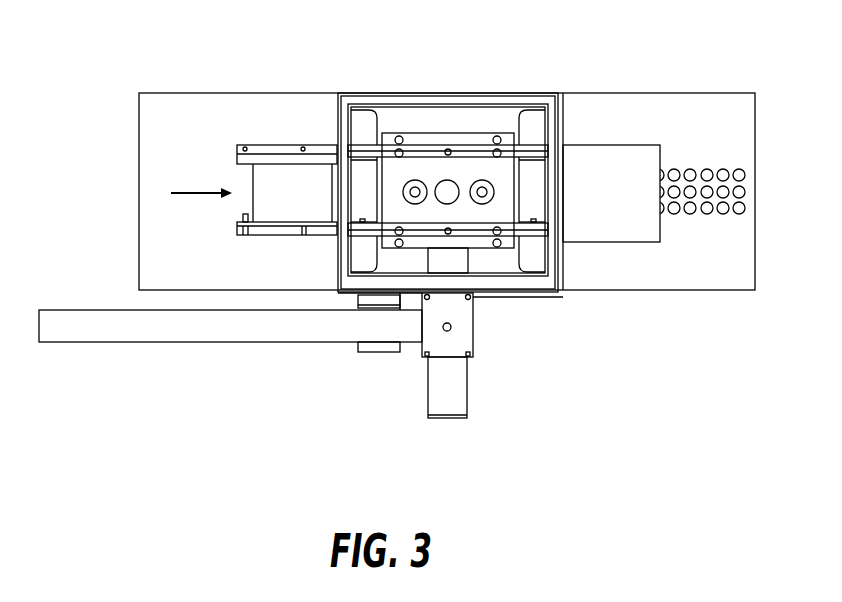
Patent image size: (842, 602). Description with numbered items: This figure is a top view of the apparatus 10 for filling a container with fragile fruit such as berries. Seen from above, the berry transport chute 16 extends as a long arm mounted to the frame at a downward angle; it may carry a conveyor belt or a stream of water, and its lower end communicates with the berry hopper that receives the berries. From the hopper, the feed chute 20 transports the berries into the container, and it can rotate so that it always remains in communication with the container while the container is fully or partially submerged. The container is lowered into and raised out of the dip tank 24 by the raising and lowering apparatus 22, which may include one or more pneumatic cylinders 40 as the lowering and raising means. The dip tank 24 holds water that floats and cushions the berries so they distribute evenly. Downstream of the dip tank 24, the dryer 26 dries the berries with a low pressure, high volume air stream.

The apparatus 10 is at (100, 126).
The berry transport chute 16 is at (153, 342).
The feed chute 20 is at (467, 398).
The raising and lowering apparatus 22 is at (447, 192).
The dip tank 24 is at (562, 260).
The dryer 26 is at (610, 145).
The pneumatic cylinder 40 is at (415, 191).